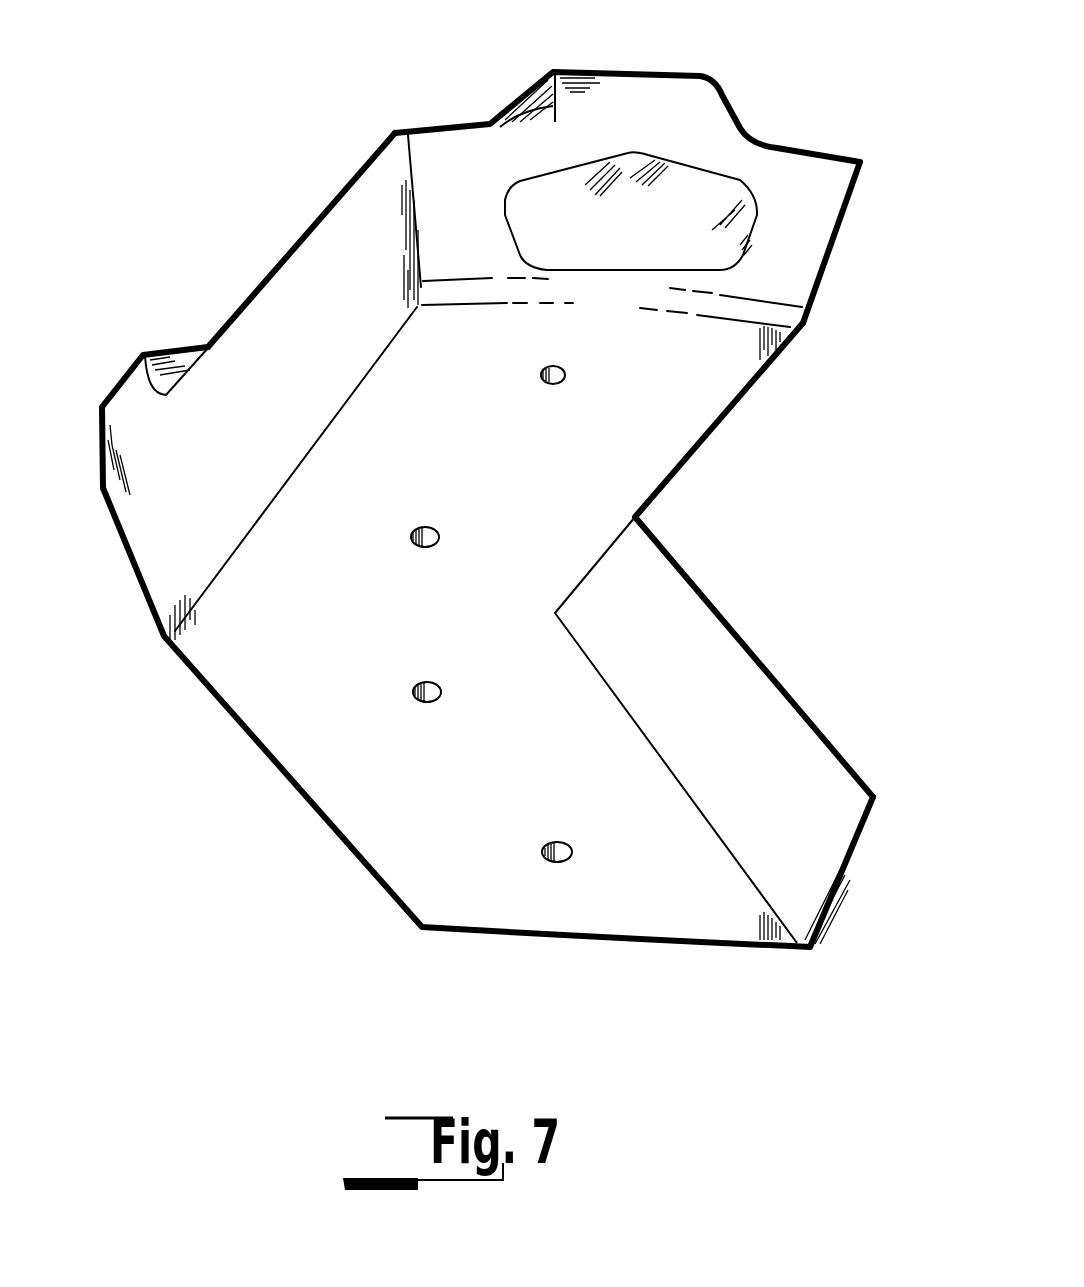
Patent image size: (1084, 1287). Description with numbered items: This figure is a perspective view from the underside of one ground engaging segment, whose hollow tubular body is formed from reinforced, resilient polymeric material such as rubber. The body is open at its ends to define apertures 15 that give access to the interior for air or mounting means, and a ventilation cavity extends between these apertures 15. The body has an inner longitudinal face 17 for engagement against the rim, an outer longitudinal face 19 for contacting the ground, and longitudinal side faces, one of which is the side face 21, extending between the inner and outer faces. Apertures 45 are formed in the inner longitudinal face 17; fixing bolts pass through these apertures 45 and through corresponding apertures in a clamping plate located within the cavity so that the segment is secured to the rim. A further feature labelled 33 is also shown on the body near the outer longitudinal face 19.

The aperture 15 is at (722, 231).
The inner longitudinal face 17 is at (692, 415).
The outer longitudinal face 19 is at (648, 72).
The longitudinal side face 21 is at (298, 282).
The raised tab 33 is at (800, 146).
The aperture 45 is at (560, 863).